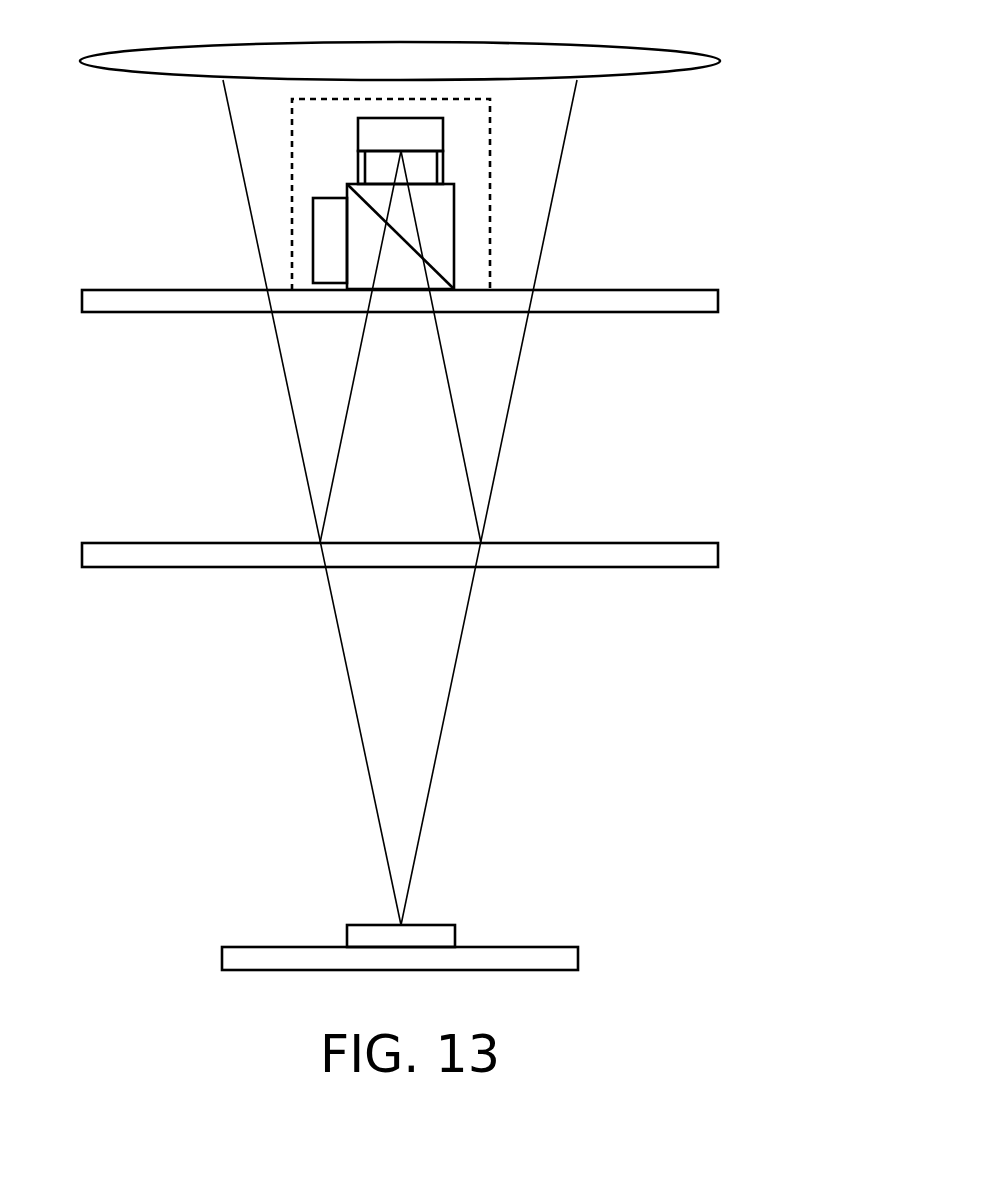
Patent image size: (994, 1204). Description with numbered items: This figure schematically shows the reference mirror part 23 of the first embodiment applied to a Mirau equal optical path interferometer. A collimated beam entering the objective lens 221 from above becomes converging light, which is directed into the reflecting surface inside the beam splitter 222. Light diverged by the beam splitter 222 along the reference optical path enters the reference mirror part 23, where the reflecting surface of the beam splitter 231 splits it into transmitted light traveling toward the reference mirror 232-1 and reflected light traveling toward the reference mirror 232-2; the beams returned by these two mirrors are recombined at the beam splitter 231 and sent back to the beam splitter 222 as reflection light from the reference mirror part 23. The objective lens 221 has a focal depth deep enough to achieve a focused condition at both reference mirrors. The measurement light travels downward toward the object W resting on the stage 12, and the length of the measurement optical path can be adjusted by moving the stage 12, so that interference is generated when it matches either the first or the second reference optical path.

The objective lens 221 is at (642, 47).
The beam splitter 222 is at (683, 568).
The reference mirror part 23 is at (490, 262).
The beam splitter 231 is at (454, 218).
The reference mirror 232-1 is at (313, 232).
The reference mirror 232-2 is at (443, 127).
The wafer W is at (455, 925).
The stage 12 is at (547, 946).